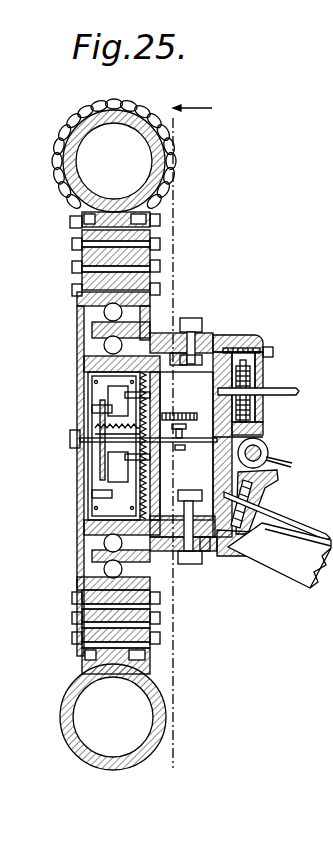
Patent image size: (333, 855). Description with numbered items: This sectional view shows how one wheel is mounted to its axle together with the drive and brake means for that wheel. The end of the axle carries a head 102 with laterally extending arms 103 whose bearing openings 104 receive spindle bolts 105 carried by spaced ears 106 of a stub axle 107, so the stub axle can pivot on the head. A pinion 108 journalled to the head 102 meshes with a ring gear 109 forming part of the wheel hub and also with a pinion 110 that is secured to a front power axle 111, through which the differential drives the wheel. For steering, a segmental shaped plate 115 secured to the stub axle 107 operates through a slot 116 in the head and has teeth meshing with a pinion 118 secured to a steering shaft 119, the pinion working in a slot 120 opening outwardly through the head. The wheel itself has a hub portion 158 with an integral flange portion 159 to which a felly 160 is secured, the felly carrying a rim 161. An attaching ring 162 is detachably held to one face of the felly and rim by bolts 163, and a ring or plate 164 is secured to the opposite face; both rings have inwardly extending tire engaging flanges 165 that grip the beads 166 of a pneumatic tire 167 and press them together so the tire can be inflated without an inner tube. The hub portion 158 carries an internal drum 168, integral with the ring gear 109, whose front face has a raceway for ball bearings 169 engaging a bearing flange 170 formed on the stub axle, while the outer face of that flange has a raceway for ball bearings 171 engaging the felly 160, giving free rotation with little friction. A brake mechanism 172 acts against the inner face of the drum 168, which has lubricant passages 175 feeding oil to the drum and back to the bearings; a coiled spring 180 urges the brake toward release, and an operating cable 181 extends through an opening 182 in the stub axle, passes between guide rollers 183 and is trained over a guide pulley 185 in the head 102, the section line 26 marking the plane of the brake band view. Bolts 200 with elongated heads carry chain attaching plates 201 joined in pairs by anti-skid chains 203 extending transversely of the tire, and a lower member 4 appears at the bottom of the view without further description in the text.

The tubular frame member 4 is at (64, 700).
The section line 26 is at (192, 438).
The head 102 is at (267, 428).
The laterally extending arm 103 is at (205, 345).
The bearing opening 104 is at (240, 338).
The spindle bolt 105 is at (200, 330).
The spaced ear 106 is at (173, 328).
The stub axle 107 is at (162, 384).
The pinion 108 is at (214, 546).
The ring gear 109 is at (160, 494).
The pinion 110 is at (282, 482).
The front power axle 111 is at (313, 556).
The segmental shaped plate 115 is at (200, 418).
The slot 116 is at (263, 420).
The pinion 118 is at (262, 368).
The steering shaft 119 is at (272, 389).
The slot 120 is at (270, 345).
The hub portion 158 is at (70, 438).
The flange portion 159 is at (77, 330).
The felly 160 is at (152, 280).
The rim 161 is at (166, 225).
The attaching ring 162 is at (72, 290).
The bolt 163 is at (156, 252).
The ring or plate 164 is at (162, 238).
The tire engaging flange 165 is at (70, 222).
The bead 166 is at (122, 206).
The pneumatic tire 167 is at (111, 126).
The internal drum 168 is at (90, 384).
The ball bearings 169 is at (88, 352).
The bearing flange 170 is at (150, 302).
The ball bearings 171 is at (100, 315).
The brake mechanism 172 is at (96, 490).
The lubricant passage 175 is at (134, 336).
The coiled spring 180 is at (92, 470).
The operating cable 181 is at (294, 464).
The opening 182 is at (176, 450).
The guide roller 183 is at (184, 430).
The guide pulley 185 is at (270, 455).
The bolt 200 is at (72, 266).
The chain attaching plate 201 is at (72, 243).
The anti-skid chain 203 is at (54, 162).